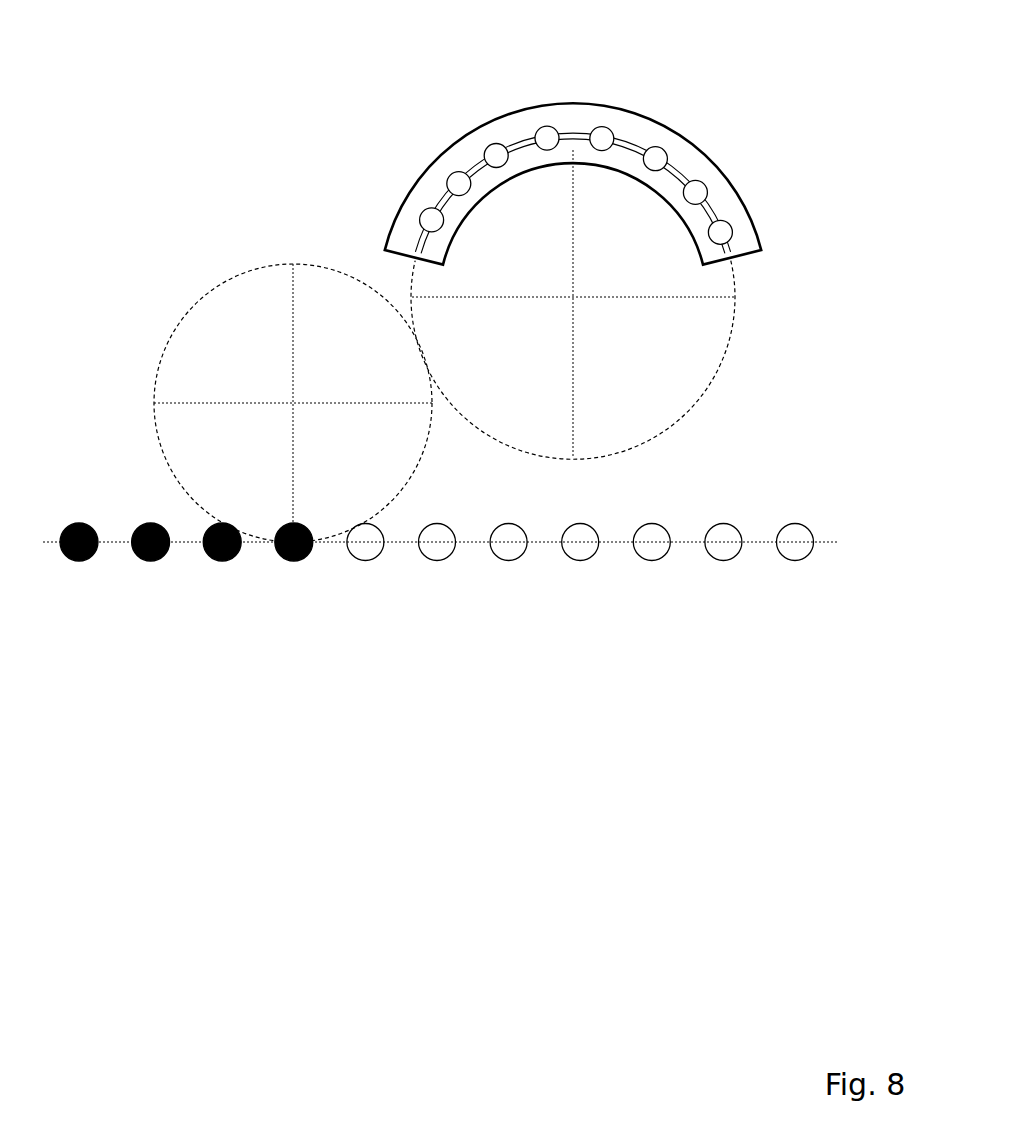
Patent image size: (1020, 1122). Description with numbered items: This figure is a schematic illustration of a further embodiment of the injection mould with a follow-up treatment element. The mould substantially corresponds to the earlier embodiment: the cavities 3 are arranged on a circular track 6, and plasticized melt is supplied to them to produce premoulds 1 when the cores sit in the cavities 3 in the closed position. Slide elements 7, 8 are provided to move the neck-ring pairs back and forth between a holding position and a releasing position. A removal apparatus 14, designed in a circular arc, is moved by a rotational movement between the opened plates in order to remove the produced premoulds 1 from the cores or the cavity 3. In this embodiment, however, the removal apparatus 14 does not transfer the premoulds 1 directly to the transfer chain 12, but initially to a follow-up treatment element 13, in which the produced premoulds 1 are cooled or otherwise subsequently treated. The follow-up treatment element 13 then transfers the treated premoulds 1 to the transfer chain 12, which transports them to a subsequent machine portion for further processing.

The premould 1 is at (297, 560).
The cavity 3 is at (500, 152).
The circular track 6 is at (703, 390).
The slide element 7 is at (418, 173).
The slide element 8 is at (417, 255).
The transfer chain 12 is at (552, 584).
The follow-up treatment element 13 is at (212, 343).
The removal apparatus 14 is at (623, 417).